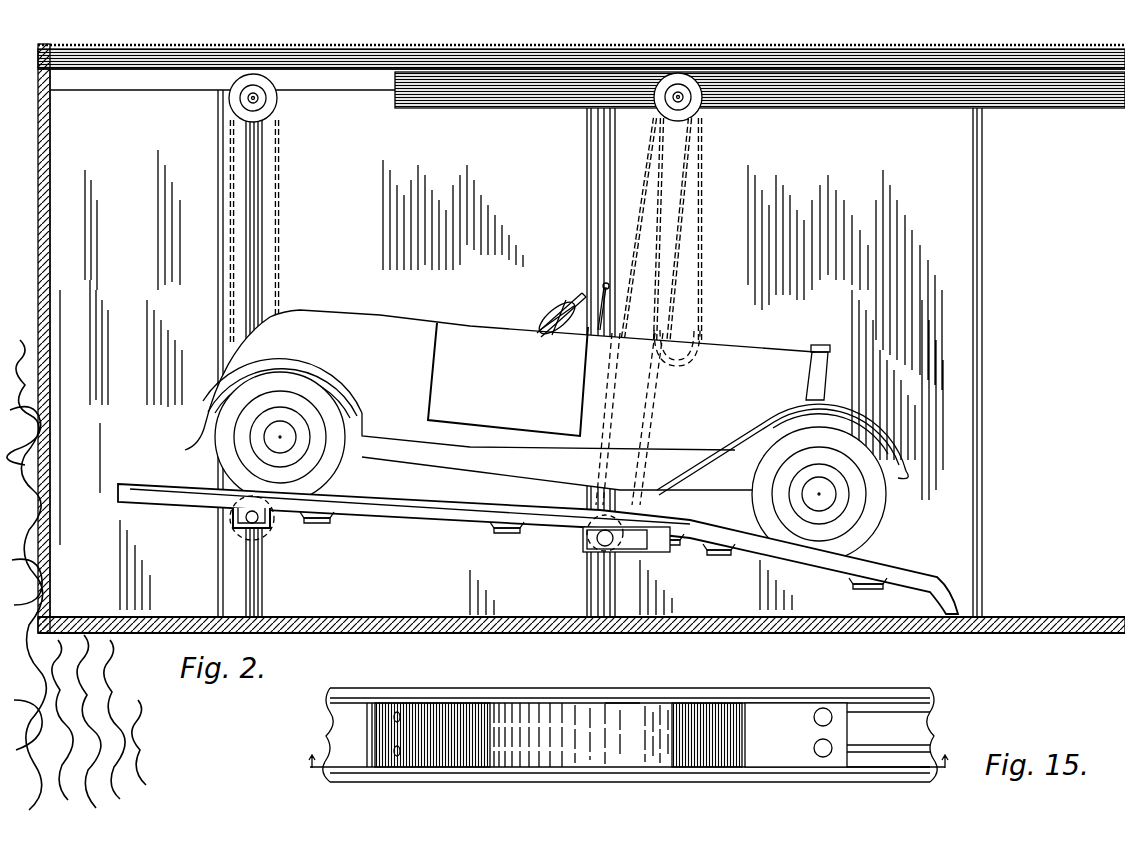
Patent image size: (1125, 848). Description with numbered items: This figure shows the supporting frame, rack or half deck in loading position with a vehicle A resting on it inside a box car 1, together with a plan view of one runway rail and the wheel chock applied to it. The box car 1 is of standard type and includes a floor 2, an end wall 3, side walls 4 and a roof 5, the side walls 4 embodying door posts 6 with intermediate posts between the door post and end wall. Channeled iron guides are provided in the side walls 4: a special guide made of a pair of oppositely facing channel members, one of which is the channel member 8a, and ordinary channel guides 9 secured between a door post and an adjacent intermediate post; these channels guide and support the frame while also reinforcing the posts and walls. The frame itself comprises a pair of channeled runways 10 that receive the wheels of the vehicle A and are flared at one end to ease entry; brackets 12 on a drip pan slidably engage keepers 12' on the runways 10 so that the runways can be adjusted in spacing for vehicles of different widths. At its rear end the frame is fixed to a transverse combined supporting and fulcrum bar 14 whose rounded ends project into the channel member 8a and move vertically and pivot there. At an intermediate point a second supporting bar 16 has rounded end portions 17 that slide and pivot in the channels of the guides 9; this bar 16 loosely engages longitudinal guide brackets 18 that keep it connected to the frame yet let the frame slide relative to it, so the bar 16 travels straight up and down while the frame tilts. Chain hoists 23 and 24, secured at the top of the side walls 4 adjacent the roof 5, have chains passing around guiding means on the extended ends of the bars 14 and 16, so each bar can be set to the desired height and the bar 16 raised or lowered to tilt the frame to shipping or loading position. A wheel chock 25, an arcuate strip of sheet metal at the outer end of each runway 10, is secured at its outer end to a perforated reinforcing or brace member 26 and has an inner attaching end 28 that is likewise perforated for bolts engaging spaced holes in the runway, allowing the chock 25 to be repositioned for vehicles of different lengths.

In FIG. 2, the box car 1 is at (40, 226).
In FIG. 2, the floor 2 is at (498, 617).
In FIG. 2, the end wall 3 is at (50, 338).
In FIG. 2, the side walls 4 is at (501, 382).
In FIG. 2, the roof 5 is at (452, 45).
In FIG. 2, the door posts 6 is at (983, 186).
In FIG. 2, the channel member 8a is at (254, 203).
In FIG. 2, the guides 9 is at (587, 218).
In FIG. 2, the runways 10 is at (440, 503).
In FIG. 15, the runways 10 is at (480, 692).
In FIG. 2, the brackets 12 is at (597, 531).
In FIG. 2, the keepers 12' is at (593, 559).
In FIG. 2, the combined supporting and fulcrum bar 14 is at (268, 520).
In FIG. 2, the second supporting bar 16 is at (590, 550).
In FIG. 15, the second supporting bar 16 is at (627, 766).
In FIG. 15, the end portions 17 is at (757, 770).
In FIG. 2, the longitudinal guide brackets 18 is at (655, 552).
In FIG. 2, the chain hoist 23 is at (270, 102).
In FIG. 2, the chain hoist 24 is at (692, 106).
In FIG. 2, the wheel chock 25 is at (214, 488).
In FIG. 15, the wheel chock 25 is at (607, 706).
In FIG. 15, the reinforcing or brace member 26 is at (372, 738).
In FIG. 15, the attaching end 28 is at (808, 718).
In FIG. 2, the vehicle A is at (546, 422).